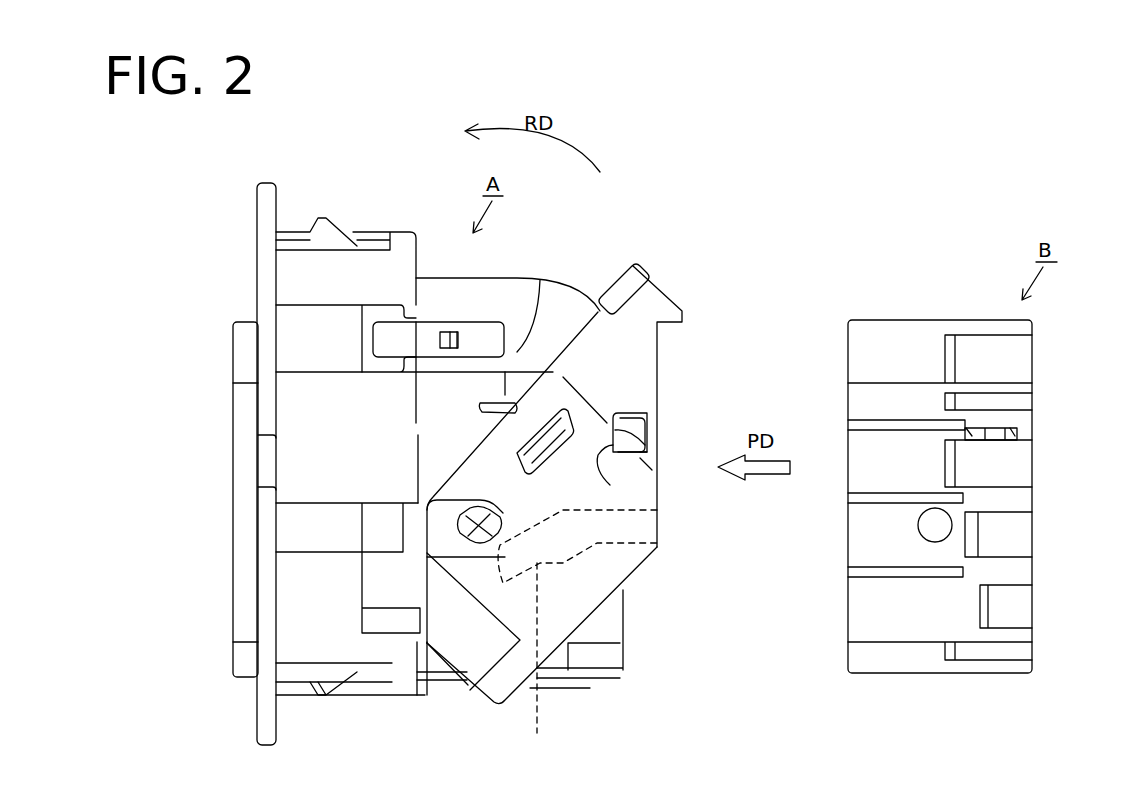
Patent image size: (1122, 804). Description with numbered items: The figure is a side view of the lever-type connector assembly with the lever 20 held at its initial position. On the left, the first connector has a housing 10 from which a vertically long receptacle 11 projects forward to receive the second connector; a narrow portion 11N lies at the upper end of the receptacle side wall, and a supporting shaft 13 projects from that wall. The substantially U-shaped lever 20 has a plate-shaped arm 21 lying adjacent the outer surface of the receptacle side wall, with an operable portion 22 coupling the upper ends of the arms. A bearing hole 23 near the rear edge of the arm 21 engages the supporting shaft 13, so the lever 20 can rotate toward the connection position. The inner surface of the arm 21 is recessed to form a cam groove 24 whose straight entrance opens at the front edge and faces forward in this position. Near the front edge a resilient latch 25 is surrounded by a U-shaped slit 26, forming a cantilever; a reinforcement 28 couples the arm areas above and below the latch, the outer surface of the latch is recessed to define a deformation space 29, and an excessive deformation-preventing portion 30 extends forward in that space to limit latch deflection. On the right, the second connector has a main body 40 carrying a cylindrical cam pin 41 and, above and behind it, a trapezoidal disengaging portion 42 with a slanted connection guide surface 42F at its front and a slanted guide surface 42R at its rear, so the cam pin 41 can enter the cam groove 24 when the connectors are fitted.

The housing 10 is at (283, 277).
The receptacle 11 is at (585, 680).
The narrow portion 11N is at (540, 280).
The supporting shaft 13 is at (477, 505).
The lever 20 is at (697, 253).
The arm 21 is at (620, 572).
The operable portion 22 is at (650, 277).
The bearing hole 23 is at (493, 535).
The cam groove 24 is at (577, 634).
The resilient latch 25 is at (657, 430).
The slit 26 is at (613, 412).
The reinforcement 28 is at (652, 435).
The deformation space 29 is at (597, 462).
The excessive deformation-preventing portion 30 is at (617, 453).
The main body 40 is at (893, 347).
The cam pin 41 is at (942, 540).
The disengaging portion 42 is at (997, 440).
The slanted connection guide surface 42F is at (975, 428).
The slanted guide surface 42R is at (1017, 430).